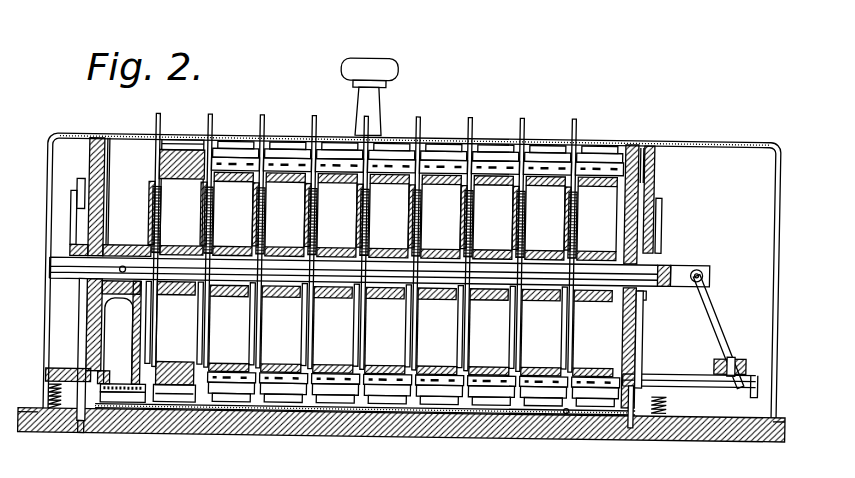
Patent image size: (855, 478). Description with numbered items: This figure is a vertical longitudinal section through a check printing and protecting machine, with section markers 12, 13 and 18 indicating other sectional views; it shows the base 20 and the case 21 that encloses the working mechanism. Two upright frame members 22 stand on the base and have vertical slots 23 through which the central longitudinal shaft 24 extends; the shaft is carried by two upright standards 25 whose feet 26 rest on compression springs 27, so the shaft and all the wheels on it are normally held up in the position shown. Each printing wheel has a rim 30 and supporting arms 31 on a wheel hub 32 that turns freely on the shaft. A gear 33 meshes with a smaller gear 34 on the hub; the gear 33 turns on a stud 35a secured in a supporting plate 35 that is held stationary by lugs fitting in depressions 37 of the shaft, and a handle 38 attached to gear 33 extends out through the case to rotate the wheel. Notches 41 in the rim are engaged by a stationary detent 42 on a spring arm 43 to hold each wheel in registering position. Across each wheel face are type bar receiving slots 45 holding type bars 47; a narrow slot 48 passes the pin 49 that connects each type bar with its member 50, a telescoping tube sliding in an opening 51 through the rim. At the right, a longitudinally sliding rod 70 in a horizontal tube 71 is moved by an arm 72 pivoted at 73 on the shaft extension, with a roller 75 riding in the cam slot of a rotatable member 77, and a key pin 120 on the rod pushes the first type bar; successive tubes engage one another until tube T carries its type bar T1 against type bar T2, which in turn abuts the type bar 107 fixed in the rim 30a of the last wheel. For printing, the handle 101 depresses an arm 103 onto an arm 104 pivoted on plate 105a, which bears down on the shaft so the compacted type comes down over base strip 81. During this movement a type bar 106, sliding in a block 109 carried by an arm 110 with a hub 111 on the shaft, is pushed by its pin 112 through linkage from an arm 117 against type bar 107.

The section line 12 is at (26, 408).
The section line 13 is at (112, 112).
The section line 18 is at (210, 370).
The base 20 is at (398, 433).
The case 21 is at (667, 124).
The upright frame members 22 is at (96, 136).
The vertical slots 23 is at (85, 320).
The central longitudinal shaft 24 is at (66, 256).
The upright standards 25 is at (630, 137).
The feet 26 is at (72, 368).
The compression springs 27 is at (52, 432).
The rim 30 is at (440, 172).
The rim of the last wheel 30a is at (172, 185).
The supporting arms 31 is at (525, 218).
The wheel hub 32 is at (440, 248).
The gear 33 is at (186, 223).
The smaller gear 34 is at (188, 294).
The supporting plate 35 is at (150, 186).
The stud 35a is at (152, 205).
The depressions 37 is at (236, 246).
The handle 38 is at (312, 116).
The notches 41 is at (236, 175).
The stationary detent 42 is at (250, 364).
The spring arm 43 is at (250, 320).
The type bar receiving slots 45 is at (216, 146).
The type bars 47 is at (494, 148).
The narrow slot 48 is at (540, 150).
The pin 49 is at (394, 152).
The members 50 is at (350, 152).
The opening 51 is at (324, 150).
The longitudinally sliding rod 70 is at (652, 366).
The horizontal tube 71 is at (720, 433).
The arm 72 is at (724, 318).
The pivot 73 is at (708, 257).
The roller 75 is at (728, 350).
The member 77 is at (650, 290).
The base strip 81 is at (571, 410).
The handle 101 is at (388, 57).
The arm 103 is at (82, 180).
The arm 104 is at (665, 197).
The plate 105a is at (656, 140).
The type bar 106 is at (147, 427).
The type bar 107 is at (188, 420).
The block 109 is at (112, 370).
The arm 110 is at (134, 318).
The hub 111 is at (116, 246).
The pin 112 is at (94, 428).
The arm 117 is at (138, 338).
The key pin 120 is at (604, 424).
The next to the last tube T is at (298, 430).
The type bar T1 is at (280, 435).
The type bar T2 is at (243, 430).